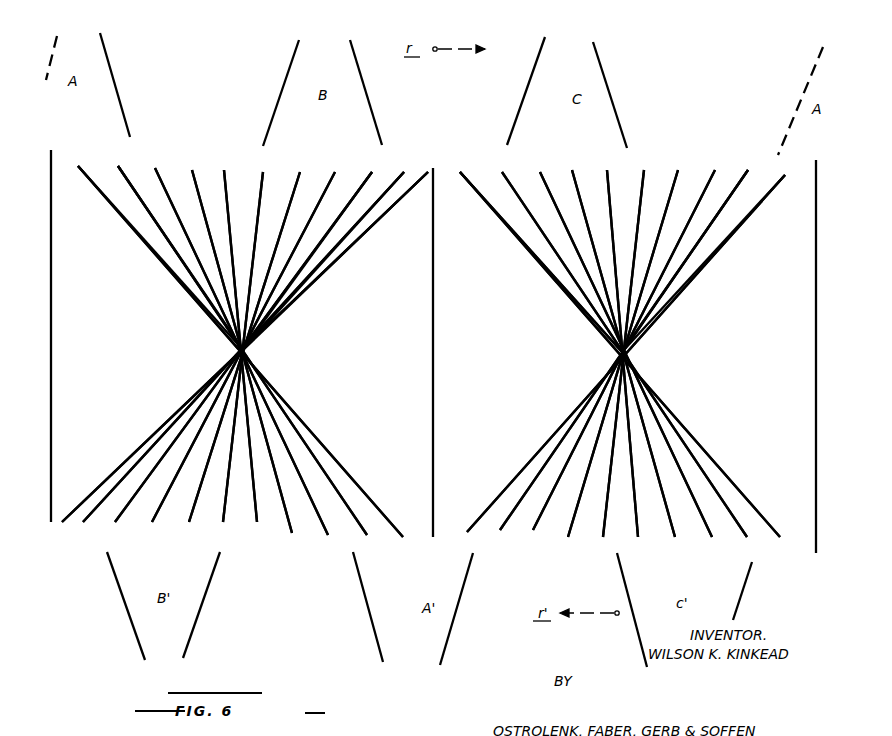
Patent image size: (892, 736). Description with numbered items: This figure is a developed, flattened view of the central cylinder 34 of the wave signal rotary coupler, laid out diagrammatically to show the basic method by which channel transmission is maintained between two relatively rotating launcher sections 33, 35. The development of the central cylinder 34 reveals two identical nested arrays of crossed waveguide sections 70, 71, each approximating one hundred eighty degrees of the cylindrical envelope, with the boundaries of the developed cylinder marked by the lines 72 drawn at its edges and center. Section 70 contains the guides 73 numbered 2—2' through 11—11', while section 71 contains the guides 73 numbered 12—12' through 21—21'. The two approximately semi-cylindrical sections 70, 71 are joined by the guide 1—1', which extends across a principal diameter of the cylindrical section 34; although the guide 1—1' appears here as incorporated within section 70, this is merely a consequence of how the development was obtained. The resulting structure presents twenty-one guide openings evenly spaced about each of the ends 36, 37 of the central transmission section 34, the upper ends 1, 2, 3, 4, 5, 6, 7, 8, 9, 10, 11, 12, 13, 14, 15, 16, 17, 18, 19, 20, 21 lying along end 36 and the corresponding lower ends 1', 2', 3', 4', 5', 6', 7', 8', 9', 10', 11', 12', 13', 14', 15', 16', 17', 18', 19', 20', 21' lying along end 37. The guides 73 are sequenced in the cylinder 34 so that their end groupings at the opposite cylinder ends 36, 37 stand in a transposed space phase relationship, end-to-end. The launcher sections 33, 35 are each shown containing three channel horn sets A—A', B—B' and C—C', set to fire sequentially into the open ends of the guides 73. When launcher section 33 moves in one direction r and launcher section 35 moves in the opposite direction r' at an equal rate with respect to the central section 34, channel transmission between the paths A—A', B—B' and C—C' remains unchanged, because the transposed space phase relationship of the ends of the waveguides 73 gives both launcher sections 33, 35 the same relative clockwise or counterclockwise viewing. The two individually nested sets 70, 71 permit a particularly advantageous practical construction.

The guide end 1 is at (249, 337).
The guide end 2 is at (245, 337).
The guide end 3 is at (246, 337).
The guide end 4 is at (248, 337).
The guide end 5 is at (247, 337).
The guide end 6 is at (244, 337).
The guide end 7 is at (238, 337).
The guide end 8 is at (238, 342).
The guide end 9 is at (238, 343).
The guide end 10 is at (235, 343).
The guide end 11 is at (233, 344).
The guide end 12 is at (633, 342).
The guide end 13 is at (629, 341).
The guide end 14 is at (629, 341).
The guide end 15 is at (628, 344).
The guide end 16 is at (627, 344).
The guide end 17 is at (617, 344).
The guide end 18 is at (618, 344).
The guide end 19 is at (618, 344).
The guide end 20 is at (617, 344).
The guide end 21 is at (615, 344).
The guide end 1' is at (237, 361).
The guide end 2' is at (237, 361).
The guide end 3' is at (237, 361).
The guide end 4' is at (236, 361).
The guide end 5' is at (237, 361).
The guide end 6' is at (238, 361).
The guide end 7' is at (244, 360).
The guide end 8' is at (246, 360).
The guide end 9' is at (246, 359).
The guide end 10' is at (248, 358).
The guide end 11' is at (248, 358).
The guide end 12' is at (615, 363).
The guide end 13' is at (614, 360).
The guide end 14' is at (616, 360).
The guide end 15' is at (615, 360).
The guide end 16' is at (616, 360).
The guide end 17' is at (627, 360).
The guide end 18' is at (627, 360).
The guide end 19' is at (629, 361).
The guide end 20' is at (629, 361).
The guide end 21' is at (627, 361).
The launcher section 33 is at (456, 93).
The central cylinder 34 is at (364, 364).
The launcher section 35 is at (290, 628).
The cylinder end 36 is at (445, 153).
The cylinder end 37 is at (348, 555).
The crossed waveguide section 70 is at (306, 288).
The crossed waveguide section 71 is at (586, 315).
The partition wall 72 is at (52, 391).
The guides 73 is at (183, 268).